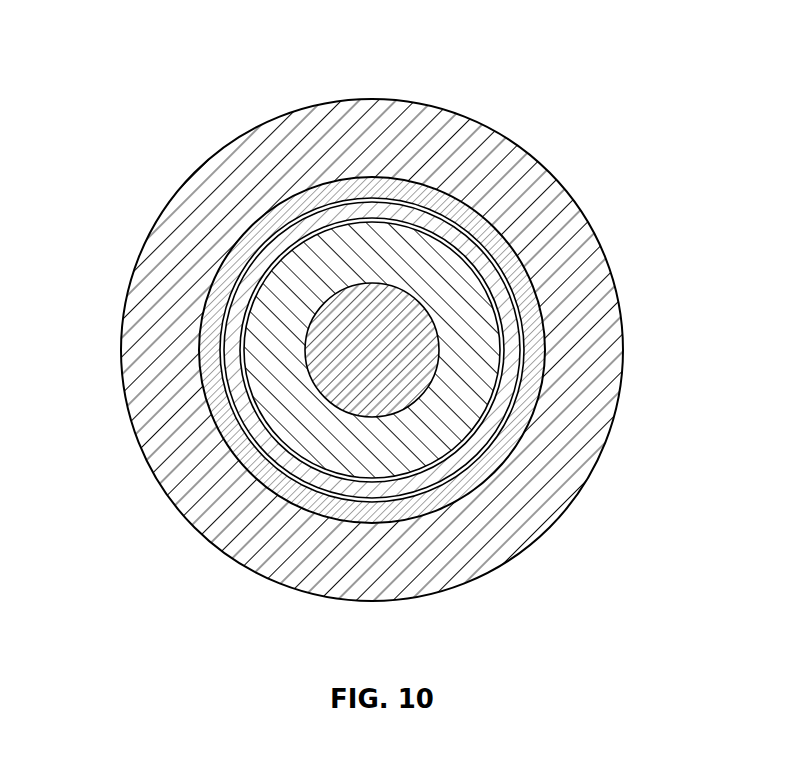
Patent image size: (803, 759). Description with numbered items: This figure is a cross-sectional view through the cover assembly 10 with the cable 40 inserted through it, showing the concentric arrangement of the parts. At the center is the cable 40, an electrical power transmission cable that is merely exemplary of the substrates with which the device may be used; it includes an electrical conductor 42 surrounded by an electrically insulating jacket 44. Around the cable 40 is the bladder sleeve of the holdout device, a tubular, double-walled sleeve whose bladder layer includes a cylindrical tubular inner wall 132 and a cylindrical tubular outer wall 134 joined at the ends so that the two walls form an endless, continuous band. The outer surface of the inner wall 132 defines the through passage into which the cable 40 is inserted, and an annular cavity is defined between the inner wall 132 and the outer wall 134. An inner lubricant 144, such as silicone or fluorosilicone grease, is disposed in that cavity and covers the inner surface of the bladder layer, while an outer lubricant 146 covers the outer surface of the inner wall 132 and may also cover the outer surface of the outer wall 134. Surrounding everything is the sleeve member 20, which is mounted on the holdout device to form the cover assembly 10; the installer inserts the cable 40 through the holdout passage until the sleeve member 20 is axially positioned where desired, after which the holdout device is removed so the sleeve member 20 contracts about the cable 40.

The cover assembly 10 is at (580, 50).
The sleeve member 20 is at (500, 153).
The cable 40 is at (400, 482).
The electrical conductor 42 is at (353, 353).
The electrically insulating jacket 44 is at (288, 308).
The inner wall 132 is at (503, 402).
The outer wall 134 is at (533, 358).
The inner lubricant 144 is at (512, 283).
The outer lubricant 146 is at (518, 313).